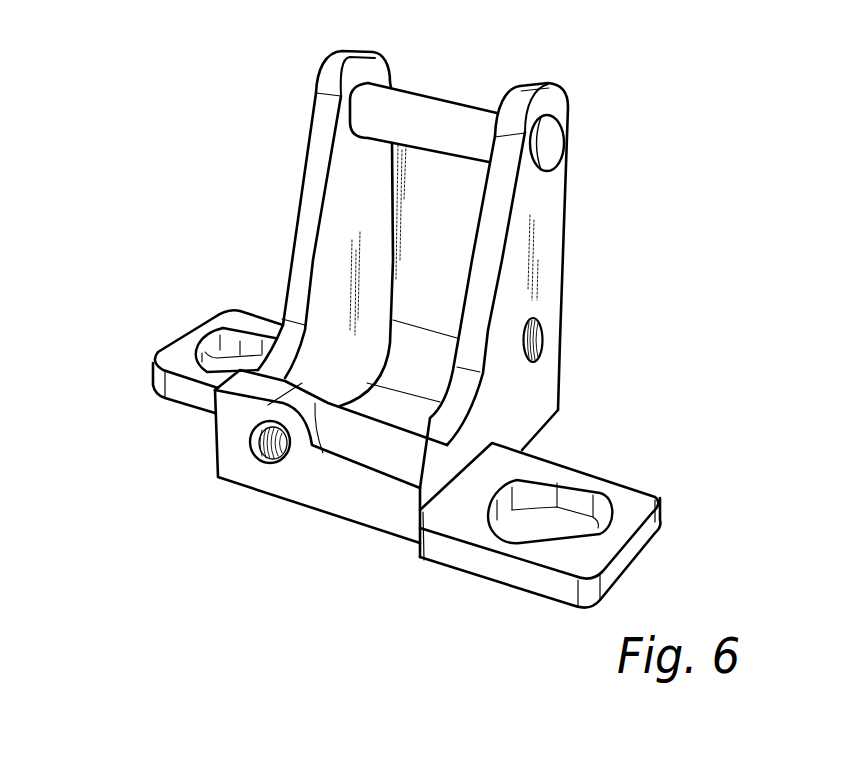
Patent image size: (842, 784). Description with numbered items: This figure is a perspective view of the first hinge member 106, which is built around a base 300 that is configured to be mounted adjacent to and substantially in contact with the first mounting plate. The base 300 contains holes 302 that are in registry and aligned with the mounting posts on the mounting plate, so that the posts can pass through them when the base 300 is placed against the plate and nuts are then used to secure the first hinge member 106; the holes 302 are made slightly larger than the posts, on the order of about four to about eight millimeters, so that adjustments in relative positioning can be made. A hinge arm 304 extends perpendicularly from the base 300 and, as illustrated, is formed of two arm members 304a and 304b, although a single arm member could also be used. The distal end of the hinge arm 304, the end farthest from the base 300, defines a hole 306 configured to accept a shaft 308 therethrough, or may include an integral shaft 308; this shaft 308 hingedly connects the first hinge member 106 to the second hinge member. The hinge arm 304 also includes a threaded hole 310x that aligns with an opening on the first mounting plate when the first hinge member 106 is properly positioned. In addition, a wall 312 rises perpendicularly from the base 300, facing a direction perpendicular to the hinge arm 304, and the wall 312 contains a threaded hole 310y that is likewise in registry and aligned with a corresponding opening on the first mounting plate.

The first hinge member 106 is at (262, 116).
The base 300 is at (533, 463).
The holes 302 is at (571, 500).
The hinge arm 304 is at (523, 280).
The arm member 304a is at (542, 193).
The arm member 304b is at (313, 193).
The hole 306 is at (552, 147).
The shaft 308 is at (436, 107).
The threaded hole 310x is at (545, 338).
The threaded hole 310y is at (255, 434).
The wall 312 is at (340, 492).